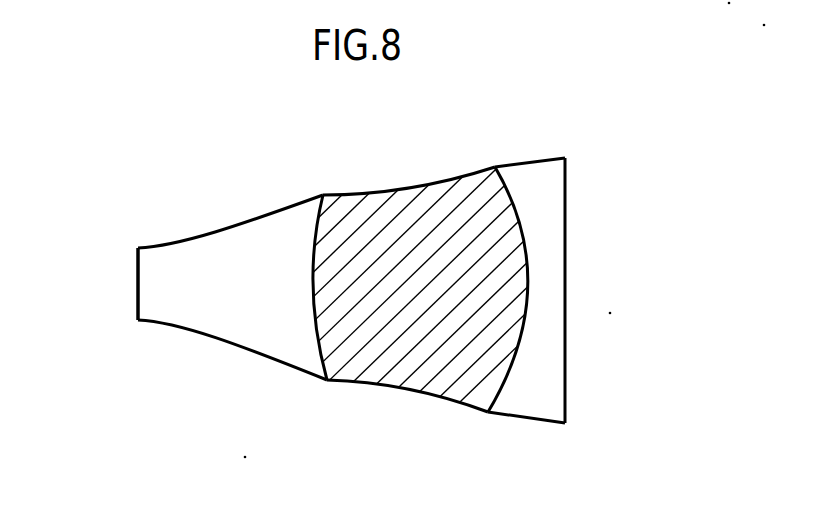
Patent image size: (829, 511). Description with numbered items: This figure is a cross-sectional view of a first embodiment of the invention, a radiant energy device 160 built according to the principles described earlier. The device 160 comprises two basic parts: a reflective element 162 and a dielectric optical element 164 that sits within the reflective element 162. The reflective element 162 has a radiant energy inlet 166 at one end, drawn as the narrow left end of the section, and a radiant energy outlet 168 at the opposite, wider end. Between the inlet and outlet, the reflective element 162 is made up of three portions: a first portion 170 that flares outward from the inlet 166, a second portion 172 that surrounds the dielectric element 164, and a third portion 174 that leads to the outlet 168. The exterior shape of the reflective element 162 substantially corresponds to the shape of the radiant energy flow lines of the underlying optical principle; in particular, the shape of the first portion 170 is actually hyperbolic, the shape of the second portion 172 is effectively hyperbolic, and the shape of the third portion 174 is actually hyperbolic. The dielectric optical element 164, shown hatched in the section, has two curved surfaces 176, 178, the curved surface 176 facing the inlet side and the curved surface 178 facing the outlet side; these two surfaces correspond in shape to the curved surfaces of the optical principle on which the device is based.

The radiant energy device 160 is at (127, 196).
The reflective element 162 is at (235, 342).
The dielectric optical element 164 is at (457, 368).
The radiant energy inlet 166 is at (137, 286).
The radiant energy outlet 168 is at (565, 292).
The first portion 170 is at (224, 224).
The second portion 172 is at (382, 188).
The third portion 174 is at (531, 150).
The curved surface 176 is at (311, 262).
The curved surface 178 is at (523, 233).